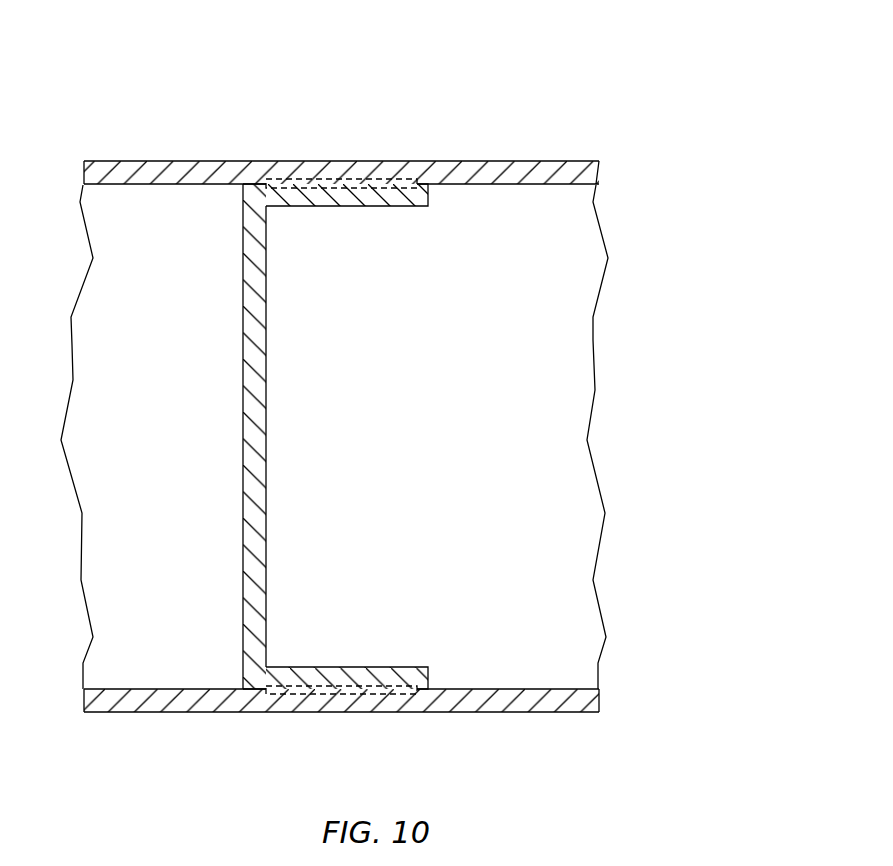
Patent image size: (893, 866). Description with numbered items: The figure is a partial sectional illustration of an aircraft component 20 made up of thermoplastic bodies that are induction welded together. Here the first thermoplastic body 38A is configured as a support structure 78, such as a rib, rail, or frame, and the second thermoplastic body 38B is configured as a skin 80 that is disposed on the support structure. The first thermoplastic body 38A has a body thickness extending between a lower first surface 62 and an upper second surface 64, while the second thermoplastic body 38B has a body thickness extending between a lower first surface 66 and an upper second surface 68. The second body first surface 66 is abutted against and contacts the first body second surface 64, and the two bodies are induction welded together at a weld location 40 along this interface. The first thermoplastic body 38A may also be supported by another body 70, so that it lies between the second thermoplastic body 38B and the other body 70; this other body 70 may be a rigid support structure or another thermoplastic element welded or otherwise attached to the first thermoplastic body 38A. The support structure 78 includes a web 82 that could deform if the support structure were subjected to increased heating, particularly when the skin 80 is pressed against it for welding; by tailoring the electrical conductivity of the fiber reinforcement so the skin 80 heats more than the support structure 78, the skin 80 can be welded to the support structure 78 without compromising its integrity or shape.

The aircraft component 20 is at (588, 85).
The first thermoplastic body 38A is at (270, 393).
The support structure 78 is at (270, 393).
The second thermoplastic body 38B is at (422, 174).
The skin 80 is at (422, 174).
The other body 70 is at (612, 698).
The second surface of the second thermoplastic body 68 is at (187, 162).
The first surface of the second thermoplastic body 66 is at (193, 185).
The second surface of the first thermoplastic body 64 is at (361, 198).
The first surface of the first thermoplastic body 62 is at (422, 176).
The weld location 40 is at (320, 190).
The web 82 is at (267, 430).